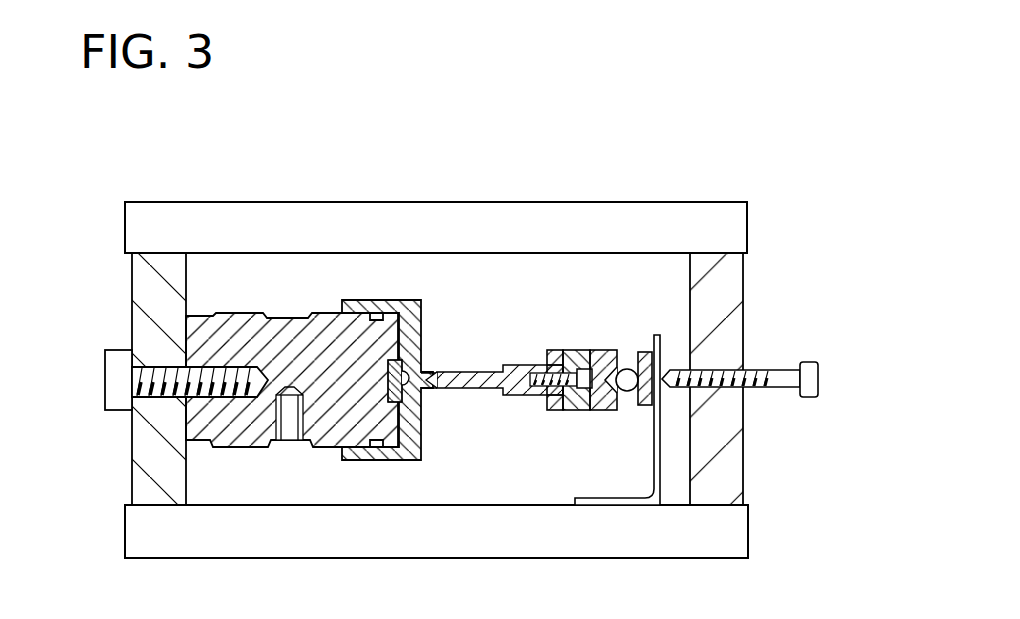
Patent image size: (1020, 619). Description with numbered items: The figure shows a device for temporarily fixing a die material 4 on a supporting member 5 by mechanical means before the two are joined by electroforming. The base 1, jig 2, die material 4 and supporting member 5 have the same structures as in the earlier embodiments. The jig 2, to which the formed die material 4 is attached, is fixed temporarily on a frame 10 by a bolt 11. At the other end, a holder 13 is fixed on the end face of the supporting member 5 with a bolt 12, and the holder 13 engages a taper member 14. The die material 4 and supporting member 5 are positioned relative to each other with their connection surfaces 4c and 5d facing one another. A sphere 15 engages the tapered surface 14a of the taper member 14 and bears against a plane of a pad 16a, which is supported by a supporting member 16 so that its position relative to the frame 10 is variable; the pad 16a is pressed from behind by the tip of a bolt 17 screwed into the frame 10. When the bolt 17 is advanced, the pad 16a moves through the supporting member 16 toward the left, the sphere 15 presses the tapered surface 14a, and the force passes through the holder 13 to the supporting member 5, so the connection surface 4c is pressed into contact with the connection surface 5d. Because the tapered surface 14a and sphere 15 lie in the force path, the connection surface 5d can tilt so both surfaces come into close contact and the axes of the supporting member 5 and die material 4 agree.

The base 1 is at (395, 373).
The jig 2 is at (288, 316).
The die material 4 is at (375, 460).
The connection surface 4c is at (433, 377).
The supporting member 5 is at (517, 392).
The connection surface 5d is at (430, 389).
The frame 10 is at (537, 537).
The bolt 11 is at (118, 349).
The bolt 12 is at (555, 358).
The holder 13 is at (570, 405).
The taper member 14 is at (600, 350).
The tapered surface 14a is at (620, 393).
The sphere 15 is at (630, 393).
The supporting member 16 is at (645, 352).
The pad 16a is at (651, 338).
The bolt 17 is at (803, 360).